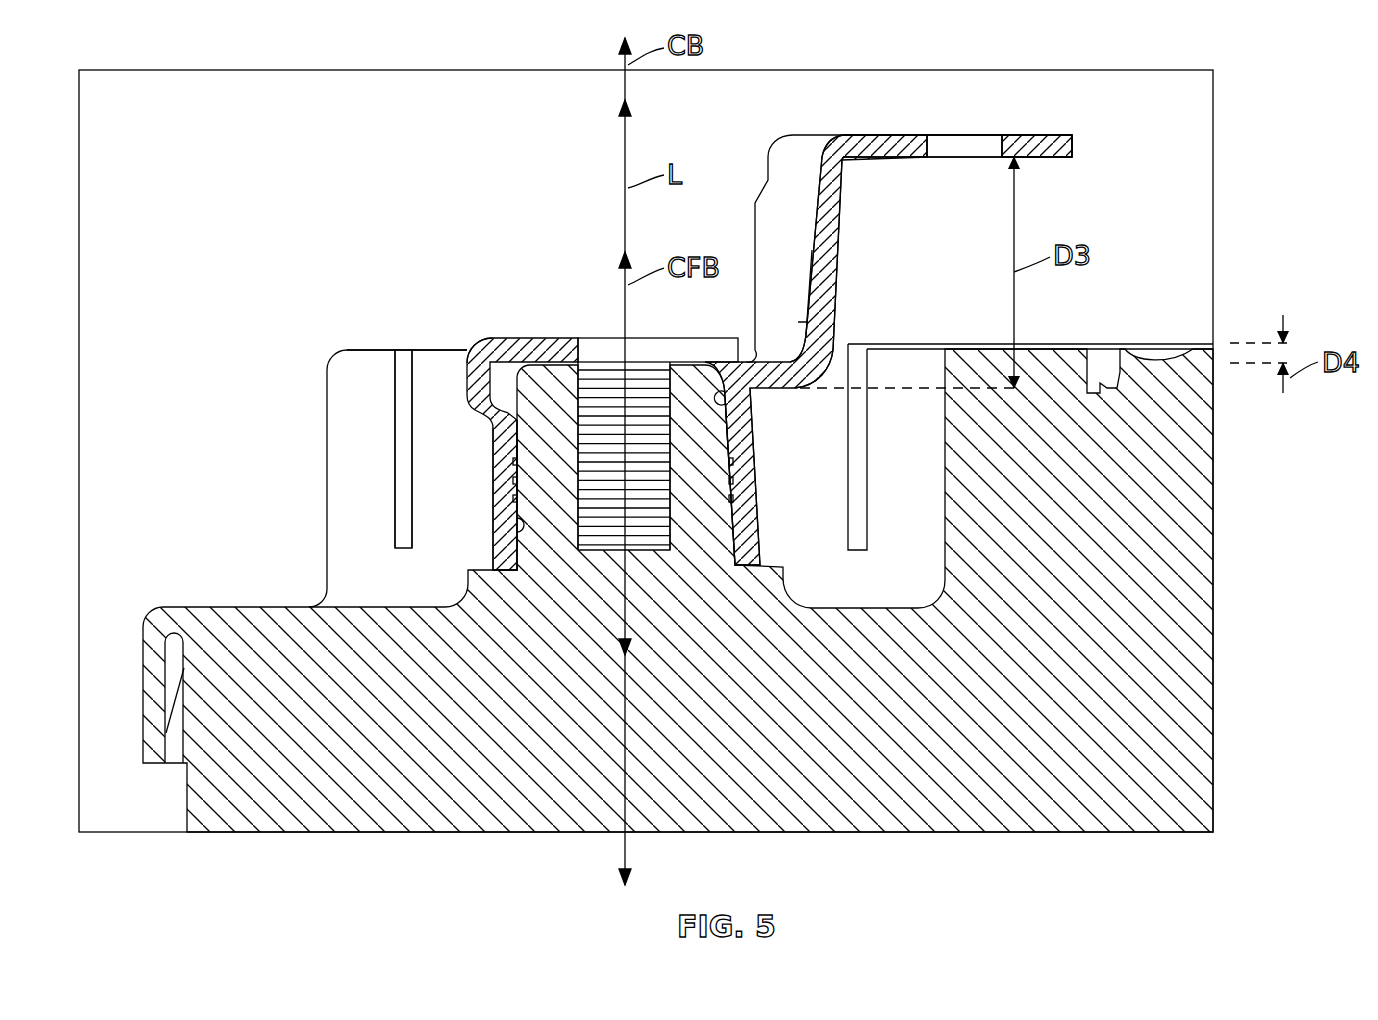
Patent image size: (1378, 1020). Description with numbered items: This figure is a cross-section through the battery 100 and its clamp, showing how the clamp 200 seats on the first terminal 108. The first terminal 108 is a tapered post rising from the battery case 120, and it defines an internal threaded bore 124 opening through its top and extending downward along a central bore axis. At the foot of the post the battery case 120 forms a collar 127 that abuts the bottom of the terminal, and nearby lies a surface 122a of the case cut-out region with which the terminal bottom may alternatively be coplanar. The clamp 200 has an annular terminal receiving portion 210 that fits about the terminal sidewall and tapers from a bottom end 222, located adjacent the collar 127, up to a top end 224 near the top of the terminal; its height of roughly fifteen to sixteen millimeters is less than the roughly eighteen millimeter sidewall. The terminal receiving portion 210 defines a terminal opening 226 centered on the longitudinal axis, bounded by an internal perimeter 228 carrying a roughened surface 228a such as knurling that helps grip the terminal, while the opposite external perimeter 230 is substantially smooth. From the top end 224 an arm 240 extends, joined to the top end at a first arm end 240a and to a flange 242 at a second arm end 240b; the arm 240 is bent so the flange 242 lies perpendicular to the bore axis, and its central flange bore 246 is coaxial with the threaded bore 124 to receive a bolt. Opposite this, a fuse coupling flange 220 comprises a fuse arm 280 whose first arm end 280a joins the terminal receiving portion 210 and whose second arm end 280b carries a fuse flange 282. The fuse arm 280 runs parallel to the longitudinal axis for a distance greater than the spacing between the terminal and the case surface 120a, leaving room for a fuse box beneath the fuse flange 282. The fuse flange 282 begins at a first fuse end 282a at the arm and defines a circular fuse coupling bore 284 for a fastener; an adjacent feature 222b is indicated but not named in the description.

The battery 100 is at (1188, 225).
The first terminal 108 is at (740, 533).
The battery case 120 is at (1200, 327).
The surface 120a is at (210, 605).
The surface of the cut-out regions 122a is at (1040, 345).
The internal threaded bore 124 is at (650, 372).
The collar 127 is at (492, 552).
The clamp 200 is at (930, 50).
The terminal receiving portion 210 is at (760, 432).
The fuse coupling flange 220 is at (1072, 123).
The bottom end 222 is at (517, 567).
The clip body end 222b is at (1075, 138).
The top end 224 is at (492, 428).
The terminal opening 226 is at (817, 360).
The internal perimeter 228 is at (733, 477).
The roughened surface 228a is at (492, 470).
The external perimeter 230 is at (500, 520).
The arm 240 is at (455, 360).
The first arm end 240a is at (363, 349).
The second arm end 240b is at (490, 338).
The flange 242 is at (520, 334).
The central flange bore 246 is at (597, 338).
The fuse arm 280 is at (843, 228).
The first arm end 280a is at (800, 323).
The second arm end 280b is at (847, 160).
The fuse flange 282 is at (1078, 150).
The first fuse end 282a is at (835, 133).
The fuse coupling bore 284 is at (970, 137).